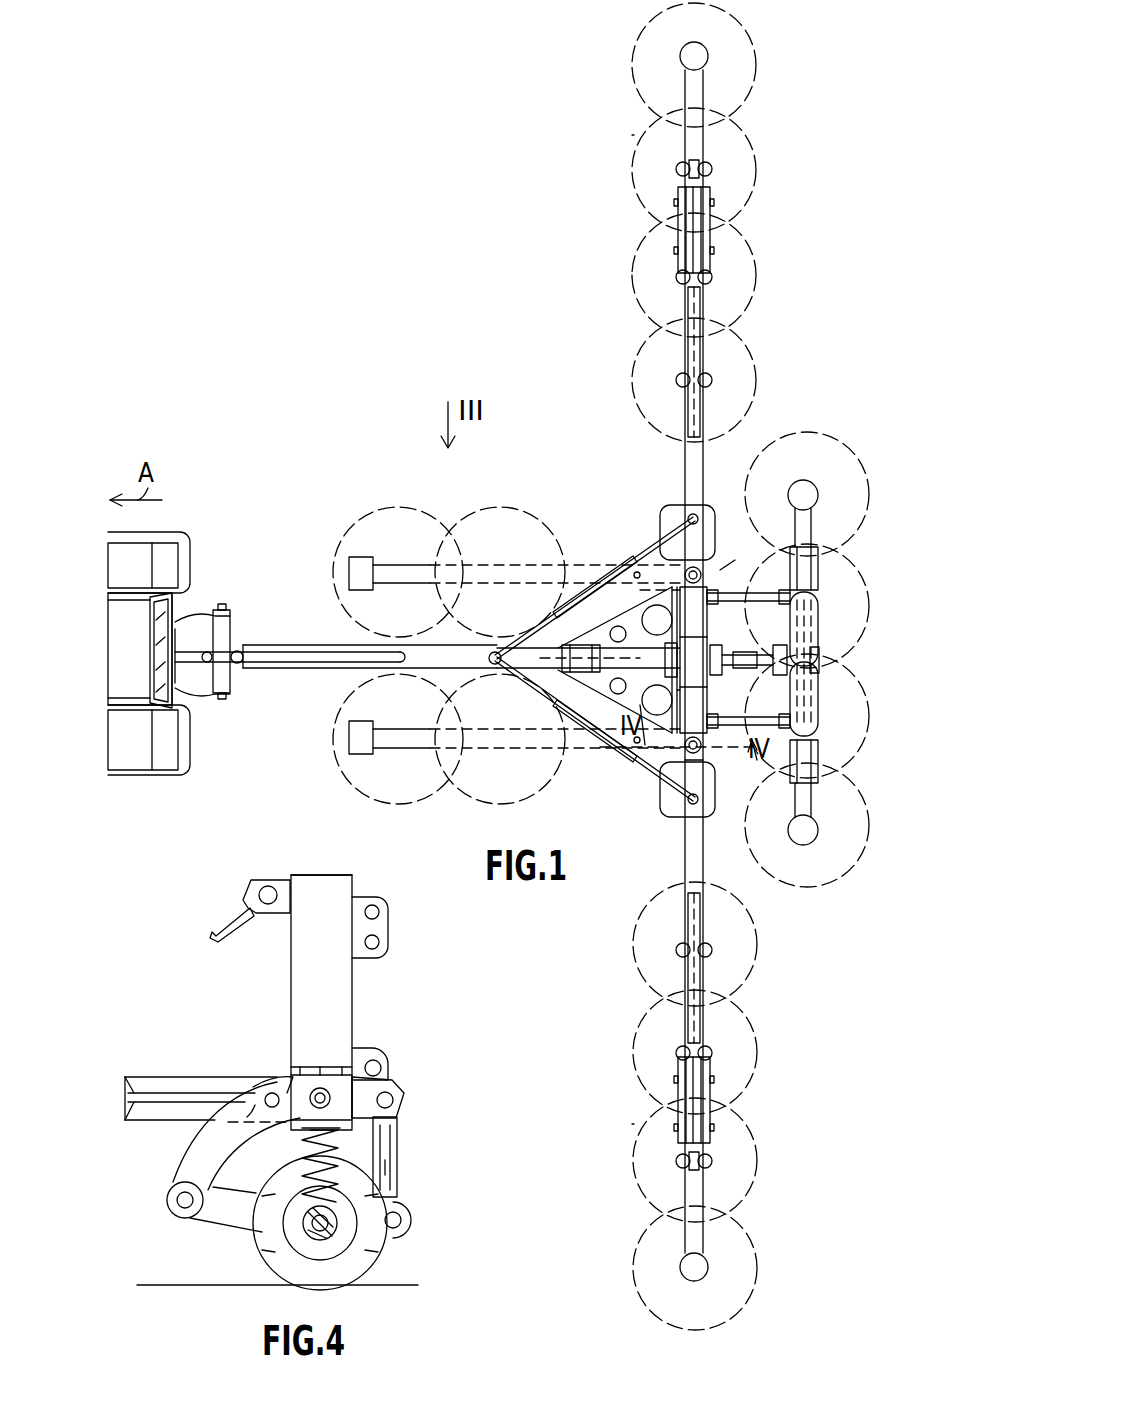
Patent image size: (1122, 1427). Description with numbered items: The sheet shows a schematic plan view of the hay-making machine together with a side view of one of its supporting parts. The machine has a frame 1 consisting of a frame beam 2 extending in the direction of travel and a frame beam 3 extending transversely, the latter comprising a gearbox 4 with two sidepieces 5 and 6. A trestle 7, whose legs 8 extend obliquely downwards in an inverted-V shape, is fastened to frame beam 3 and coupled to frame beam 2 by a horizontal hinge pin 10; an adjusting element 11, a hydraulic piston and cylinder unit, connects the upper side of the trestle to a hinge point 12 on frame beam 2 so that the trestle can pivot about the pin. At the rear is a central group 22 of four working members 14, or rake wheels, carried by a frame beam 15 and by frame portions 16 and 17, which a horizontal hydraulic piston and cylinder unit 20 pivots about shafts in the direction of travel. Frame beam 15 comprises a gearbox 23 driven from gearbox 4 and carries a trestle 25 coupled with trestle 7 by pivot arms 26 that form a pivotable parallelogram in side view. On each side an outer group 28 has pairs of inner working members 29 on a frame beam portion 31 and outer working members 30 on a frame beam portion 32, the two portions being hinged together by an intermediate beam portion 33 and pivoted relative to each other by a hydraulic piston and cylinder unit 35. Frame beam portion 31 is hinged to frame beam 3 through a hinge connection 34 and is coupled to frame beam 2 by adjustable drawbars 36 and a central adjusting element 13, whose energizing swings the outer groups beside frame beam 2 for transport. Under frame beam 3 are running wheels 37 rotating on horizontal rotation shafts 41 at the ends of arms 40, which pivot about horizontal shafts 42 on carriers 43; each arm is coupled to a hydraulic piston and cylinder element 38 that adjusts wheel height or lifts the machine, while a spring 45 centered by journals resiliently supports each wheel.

In FIG. 1, the frame 1 is at (544, 474).
In FIG. 1, the frame beam 2 is at (278, 642).
In FIG. 4, the frame beam 2 is at (165, 1080).
In FIG. 1, the frame beam 3 is at (700, 700).
In FIG. 4, the frame beam 3 is at (300, 1058).
In FIG. 1, the gearbox 4 is at (700, 650).
In FIG. 4, the gearbox 4 is at (341, 1092).
In FIG. 1, the sidepiece 5 is at (683, 848).
In FIG. 1, the sidepiece 6 is at (680, 458).
In FIG. 1, the trestle 7 is at (700, 600).
In FIG. 4, the trestle 7 is at (316, 866).
In FIG. 4, the leg 8 is at (300, 957).
In FIG. 1, the hinge pin 10 is at (624, 676).
In FIG. 4, the hinge pin 10 is at (270, 1083).
In FIG. 1, the adjusting element 11 is at (606, 646).
In FIG. 4, the adjusting element 11 is at (230, 914).
In FIG. 1, the hinge point 12 is at (497, 670).
In FIG. 1, the central adjusting element 13 is at (300, 662).
In FIG. 1, the working members 14 is at (843, 552).
In FIG. 1, the frame beam 15 is at (816, 520).
In FIG. 1, the frame portion 16 is at (790, 812).
In FIG. 1, the frame portion 17 is at (792, 514).
In FIG. 1, the horizontal hydraulic piston and cylinder unit 20 is at (813, 658).
In FIG. 1, the central group 22 is at (855, 830).
In FIG. 1, the gearbox 23 is at (820, 669).
In FIG. 1, the trestle 25 is at (750, 672).
In FIG. 1, the pivot arms 26 is at (746, 606).
In FIG. 1, the outer groups of working members 28 is at (630, 135).
In FIG. 1, the inner working members 29 is at (652, 362).
In FIG. 1, the outer working members 30 is at (747, 86).
In FIG. 1, the frame beam portion 31 is at (684, 484).
In FIG. 1, the frame beam portion 32 is at (680, 76).
In FIG. 1, the intermediate beam portion 33 is at (708, 226).
In FIG. 1, the hinge connection 34 is at (730, 560).
In FIG. 1, the hydraulic piston and cylinder unit 35 is at (700, 310).
In FIG. 1, the adjustable drawbars 36 is at (592, 585).
In FIG. 1, the wheels 37 is at (662, 520).
In FIG. 4, the wheels 37 is at (362, 1258).
In FIG. 4, the hydraulic piston and cylinder element 38 is at (396, 1128).
In FIG. 4, the arms 40 is at (225, 1220).
In FIG. 4, the horizontal rotation shafts 41 is at (308, 1238).
In FIG. 4, the horizontal shafts 42 is at (178, 1204).
In FIG. 4, the carriers 43 is at (205, 1142).
In FIG. 4, the spring 45 is at (345, 1160).